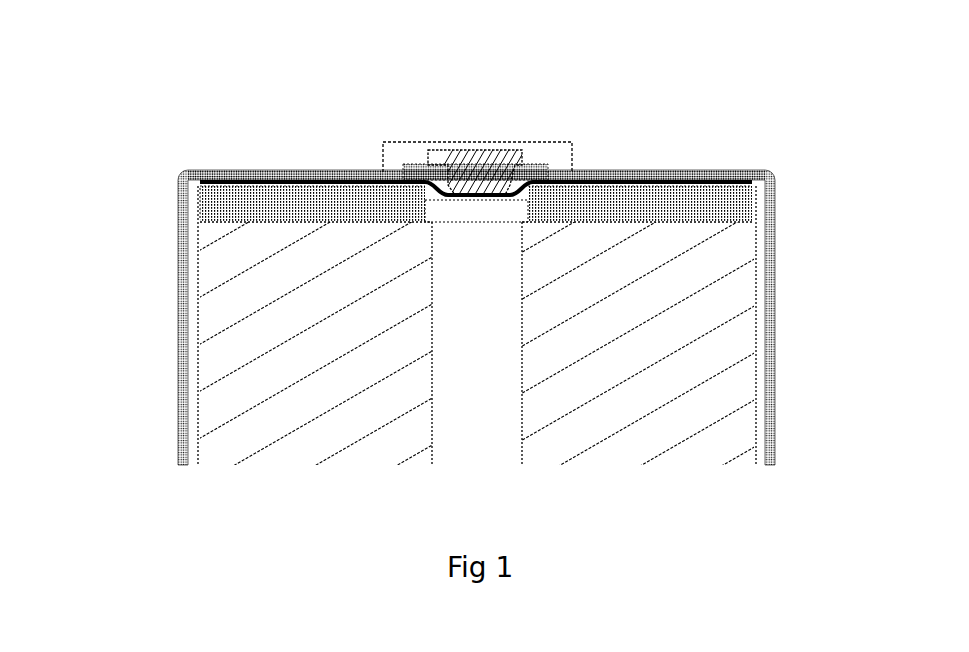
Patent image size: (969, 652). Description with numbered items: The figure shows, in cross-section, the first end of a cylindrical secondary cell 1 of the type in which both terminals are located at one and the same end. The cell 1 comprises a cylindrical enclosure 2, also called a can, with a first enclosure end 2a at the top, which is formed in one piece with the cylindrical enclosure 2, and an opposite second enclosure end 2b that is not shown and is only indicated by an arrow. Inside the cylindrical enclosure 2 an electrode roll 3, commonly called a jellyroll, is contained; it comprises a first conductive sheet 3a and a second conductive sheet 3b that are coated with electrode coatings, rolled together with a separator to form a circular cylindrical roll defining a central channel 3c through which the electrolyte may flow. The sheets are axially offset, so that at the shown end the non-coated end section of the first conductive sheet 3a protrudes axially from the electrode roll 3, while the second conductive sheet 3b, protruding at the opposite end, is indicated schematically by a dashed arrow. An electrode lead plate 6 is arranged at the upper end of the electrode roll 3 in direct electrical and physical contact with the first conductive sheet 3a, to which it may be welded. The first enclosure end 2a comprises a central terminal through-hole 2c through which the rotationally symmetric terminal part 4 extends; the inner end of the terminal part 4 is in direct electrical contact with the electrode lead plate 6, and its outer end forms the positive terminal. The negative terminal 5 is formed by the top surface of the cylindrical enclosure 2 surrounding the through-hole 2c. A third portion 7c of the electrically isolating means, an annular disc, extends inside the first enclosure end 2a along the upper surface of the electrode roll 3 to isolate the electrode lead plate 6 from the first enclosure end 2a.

The cylindrical secondary cell 1 is at (158, 61).
The cylindrical enclosure 2 is at (770, 378).
The first enclosure end 2a is at (720, 143).
The second enclosure end 2b is at (825, 528).
The central terminal through-hole 2c is at (502, 170).
The electrode roll 3 is at (290, 367).
The first conductive sheet 3a is at (217, 205).
The second conductive sheet 3b is at (220, 448).
The central channel 3c is at (493, 400).
The terminal part 4 is at (470, 170).
The negative terminal 5 is at (247, 182).
The electrode lead plate 6 is at (213, 183).
The third portion 7c is at (226, 184).